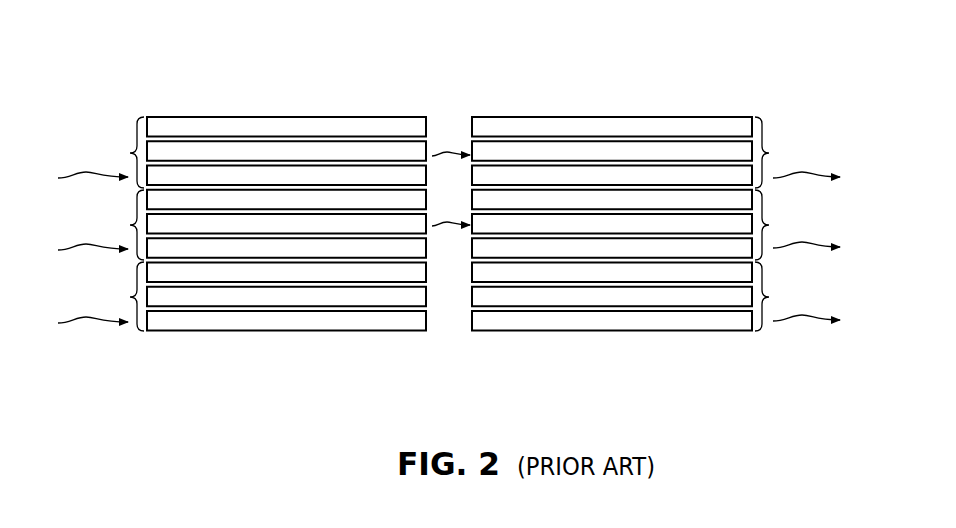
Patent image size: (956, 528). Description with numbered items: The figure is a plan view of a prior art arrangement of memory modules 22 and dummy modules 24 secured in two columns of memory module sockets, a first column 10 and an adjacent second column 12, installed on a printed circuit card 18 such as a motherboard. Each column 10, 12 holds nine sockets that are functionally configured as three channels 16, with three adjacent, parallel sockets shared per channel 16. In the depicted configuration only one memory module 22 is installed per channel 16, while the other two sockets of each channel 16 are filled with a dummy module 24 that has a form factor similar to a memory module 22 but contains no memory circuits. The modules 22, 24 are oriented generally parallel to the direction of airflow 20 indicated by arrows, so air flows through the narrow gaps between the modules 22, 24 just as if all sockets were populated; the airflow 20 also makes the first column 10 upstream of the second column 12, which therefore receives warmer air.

The first column 10 is at (284, 93).
The second column 12 is at (614, 94).
The channel 16 is at (448, 224).
The printed circuit card 18 is at (460, 348).
The direction of airflow 20 is at (72, 177).
The memory module 22 is at (299, 186).
The dummy module 24 is at (352, 150).